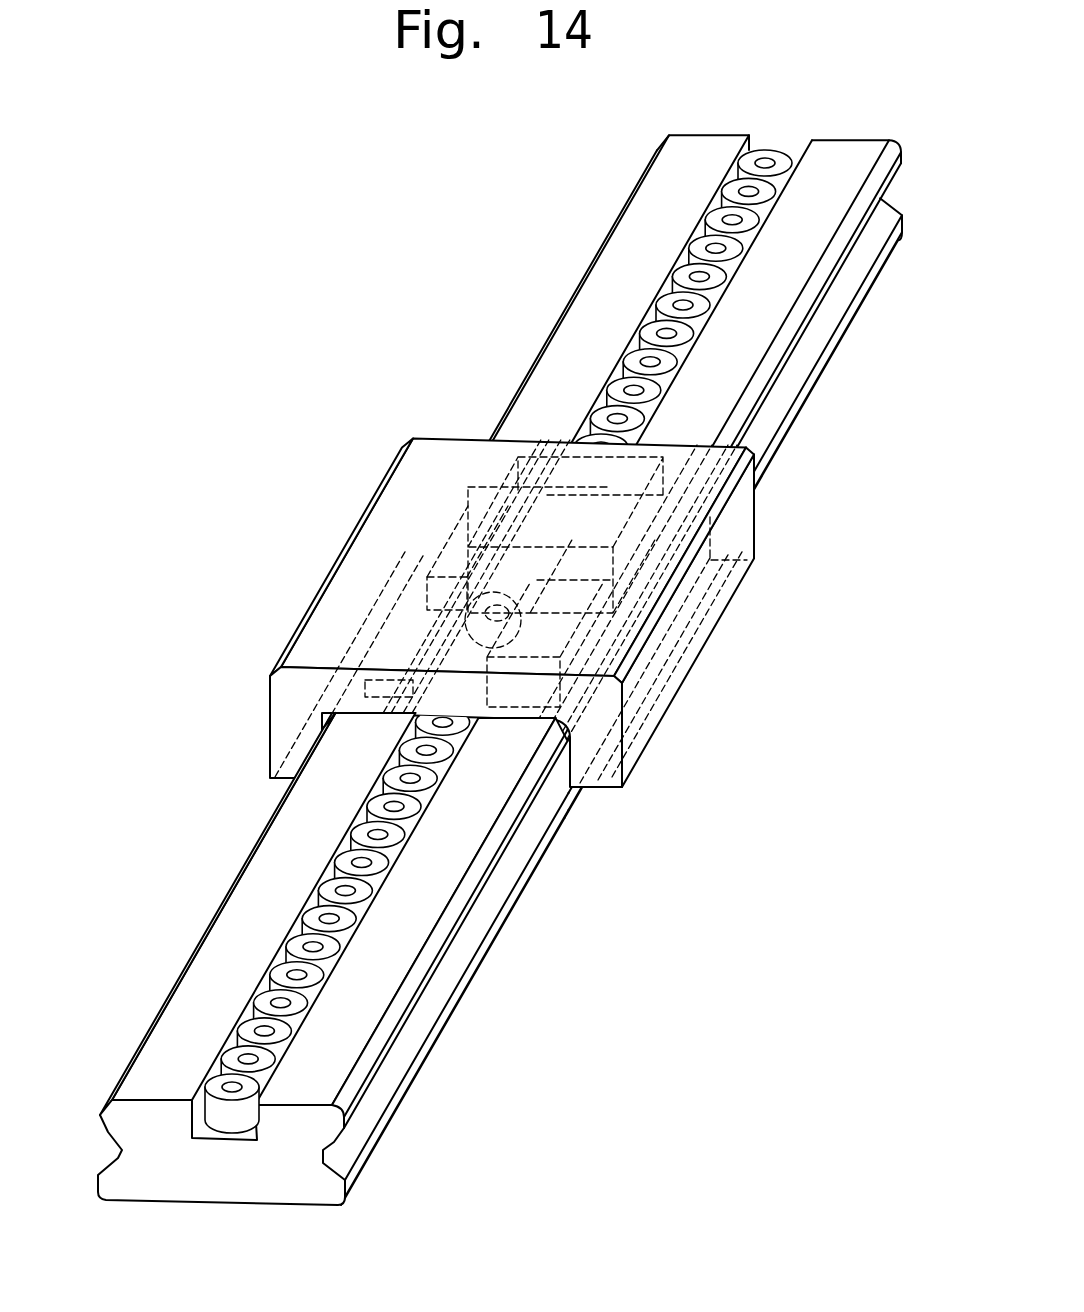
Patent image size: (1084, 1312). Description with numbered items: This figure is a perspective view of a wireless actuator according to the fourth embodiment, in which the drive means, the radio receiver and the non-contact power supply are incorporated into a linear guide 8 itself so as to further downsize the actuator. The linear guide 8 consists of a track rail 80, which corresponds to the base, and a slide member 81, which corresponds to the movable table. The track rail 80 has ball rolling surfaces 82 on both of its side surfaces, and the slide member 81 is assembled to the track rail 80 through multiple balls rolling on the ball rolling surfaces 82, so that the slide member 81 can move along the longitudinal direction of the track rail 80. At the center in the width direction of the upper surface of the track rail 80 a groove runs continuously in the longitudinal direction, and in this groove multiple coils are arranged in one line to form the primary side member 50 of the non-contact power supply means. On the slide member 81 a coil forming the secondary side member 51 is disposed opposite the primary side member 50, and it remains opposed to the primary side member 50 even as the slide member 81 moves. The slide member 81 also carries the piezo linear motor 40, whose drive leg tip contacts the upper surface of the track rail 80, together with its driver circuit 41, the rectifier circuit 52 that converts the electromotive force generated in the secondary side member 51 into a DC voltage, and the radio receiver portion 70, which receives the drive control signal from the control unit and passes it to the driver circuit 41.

The linear guide 8 is at (547, 266).
The piezo linear motor 40 is at (583, 637).
The driver circuit 41 is at (473, 507).
The primary side member 50 is at (298, 945).
The secondary side member 51 is at (492, 612).
The rectifier circuit 52 is at (405, 650).
The radio receiver portion 70 is at (543, 453).
The track rail 80 is at (432, 1040).
The slide member 81 is at (342, 553).
The ball rolling surfaces 82 is at (197, 985).